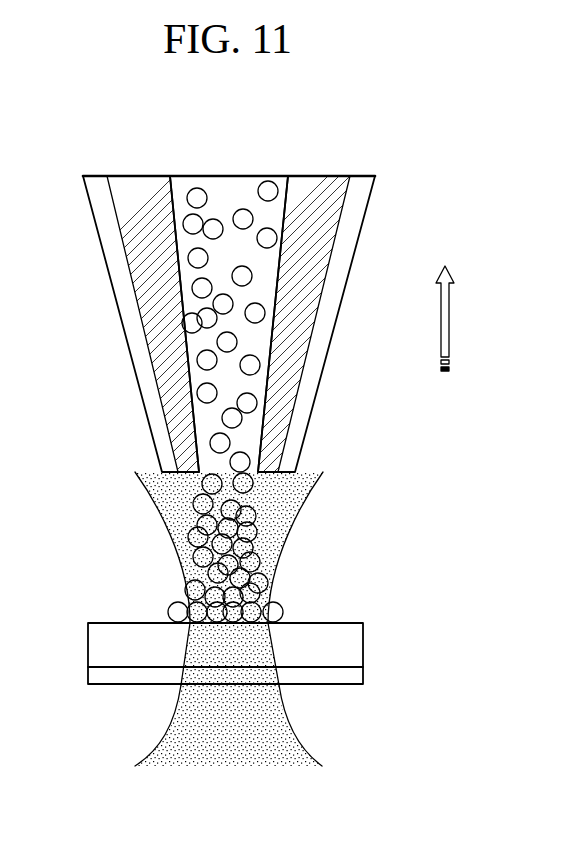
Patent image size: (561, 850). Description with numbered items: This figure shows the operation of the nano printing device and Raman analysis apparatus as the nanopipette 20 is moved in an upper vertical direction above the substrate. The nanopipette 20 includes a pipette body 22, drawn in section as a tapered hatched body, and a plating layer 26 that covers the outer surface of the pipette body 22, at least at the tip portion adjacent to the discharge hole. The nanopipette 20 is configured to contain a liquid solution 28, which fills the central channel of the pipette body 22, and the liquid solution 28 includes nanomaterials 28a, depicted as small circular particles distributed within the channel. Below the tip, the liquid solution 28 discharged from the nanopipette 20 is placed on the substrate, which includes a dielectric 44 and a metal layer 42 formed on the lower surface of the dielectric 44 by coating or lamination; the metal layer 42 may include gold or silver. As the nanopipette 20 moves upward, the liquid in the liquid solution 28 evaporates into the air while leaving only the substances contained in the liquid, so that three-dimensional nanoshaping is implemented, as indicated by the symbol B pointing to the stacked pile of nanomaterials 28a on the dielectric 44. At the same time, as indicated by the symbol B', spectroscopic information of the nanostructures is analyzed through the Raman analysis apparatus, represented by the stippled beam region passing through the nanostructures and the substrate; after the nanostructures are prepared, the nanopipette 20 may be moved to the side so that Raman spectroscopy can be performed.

The nanopipette 20 is at (392, 203).
The pipette body 22 is at (327, 252).
The plating layer 26 is at (330, 315).
The liquid solution 28 is at (226, 185).
The nanomaterials 28a is at (193, 197).
The nanoshaping B is at (190, 547).
The Raman analysis B' is at (250, 622).
The dielectric 44 is at (358, 640).
The metal layer 42 is at (358, 675).